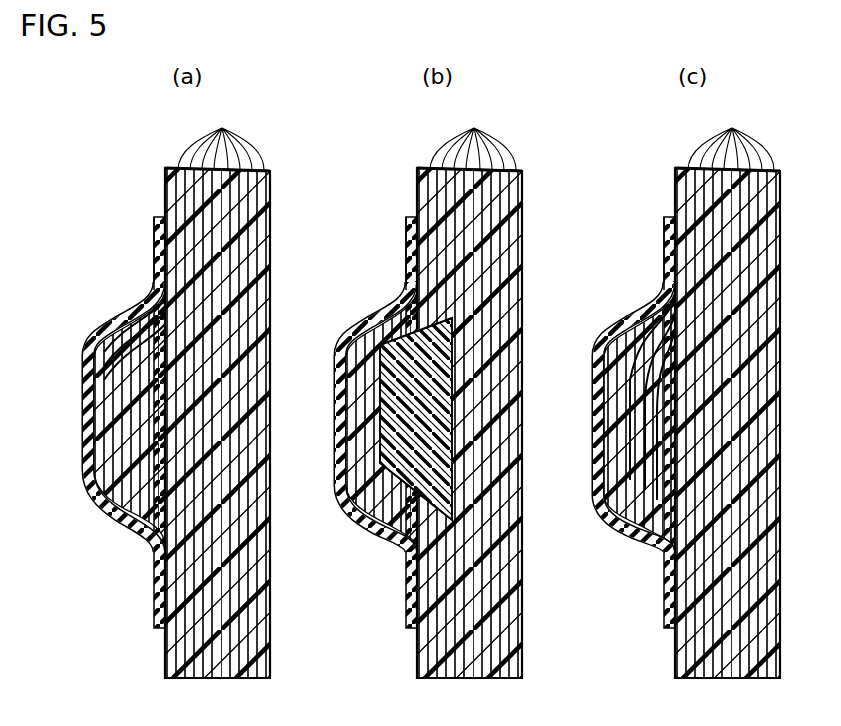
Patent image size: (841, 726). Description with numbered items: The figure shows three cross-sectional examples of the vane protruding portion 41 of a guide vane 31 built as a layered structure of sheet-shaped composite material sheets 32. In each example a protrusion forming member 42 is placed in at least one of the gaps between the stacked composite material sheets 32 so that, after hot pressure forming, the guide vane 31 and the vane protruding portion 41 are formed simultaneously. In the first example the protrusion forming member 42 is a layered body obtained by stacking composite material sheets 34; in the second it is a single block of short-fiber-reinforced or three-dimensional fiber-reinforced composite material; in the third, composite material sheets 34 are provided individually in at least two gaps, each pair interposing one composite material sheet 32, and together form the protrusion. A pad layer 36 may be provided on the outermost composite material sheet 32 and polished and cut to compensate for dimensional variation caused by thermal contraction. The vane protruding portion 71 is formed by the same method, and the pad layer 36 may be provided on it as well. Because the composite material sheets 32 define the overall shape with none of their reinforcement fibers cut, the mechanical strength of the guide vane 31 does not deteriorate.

The guide vane 31 is at (289, 170).
The composite material sheet 32 is at (476, 136).
The composite material sheet 34 is at (190, 450).
The pad layer 36 is at (150, 300).
The vane protruding portion 41 is at (359, 415).
The vane protruding portion 71 is at (82, 372).
The protrusion forming member 42 is at (139, 500).